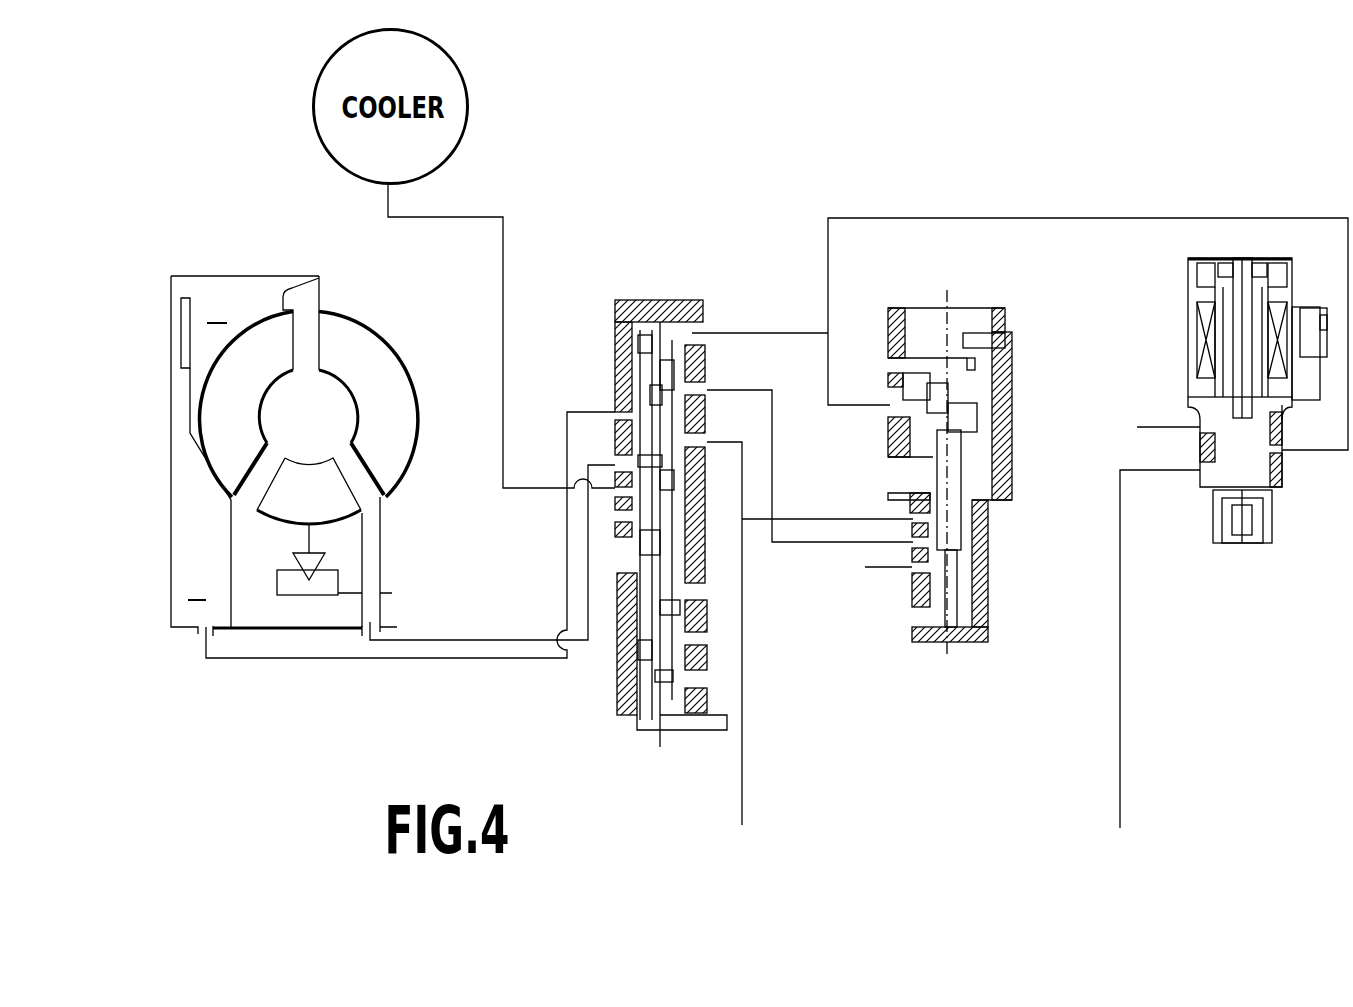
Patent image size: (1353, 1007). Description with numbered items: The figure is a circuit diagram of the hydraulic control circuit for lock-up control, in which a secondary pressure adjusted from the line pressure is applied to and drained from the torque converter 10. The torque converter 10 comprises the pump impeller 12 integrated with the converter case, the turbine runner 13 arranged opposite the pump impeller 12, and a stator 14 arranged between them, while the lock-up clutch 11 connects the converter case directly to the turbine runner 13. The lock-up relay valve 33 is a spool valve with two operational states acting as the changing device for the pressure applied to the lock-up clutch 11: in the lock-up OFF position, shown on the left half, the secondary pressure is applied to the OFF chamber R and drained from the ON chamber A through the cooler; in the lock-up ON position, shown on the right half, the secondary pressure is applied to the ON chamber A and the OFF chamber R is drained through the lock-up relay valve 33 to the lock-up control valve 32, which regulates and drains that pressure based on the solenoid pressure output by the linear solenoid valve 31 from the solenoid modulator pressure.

The torque converter 10 is at (258, 263).
The lock-up clutch 11 is at (178, 318).
The pump impeller 12 is at (393, 347).
The turbine runner 13 is at (320, 284).
The stator 14 is at (310, 458).
The linear solenoid valve 31 is at (1178, 277).
The lock-up control valve 32 is at (1022, 309).
The lock-up relay valve 33 is at (712, 306).